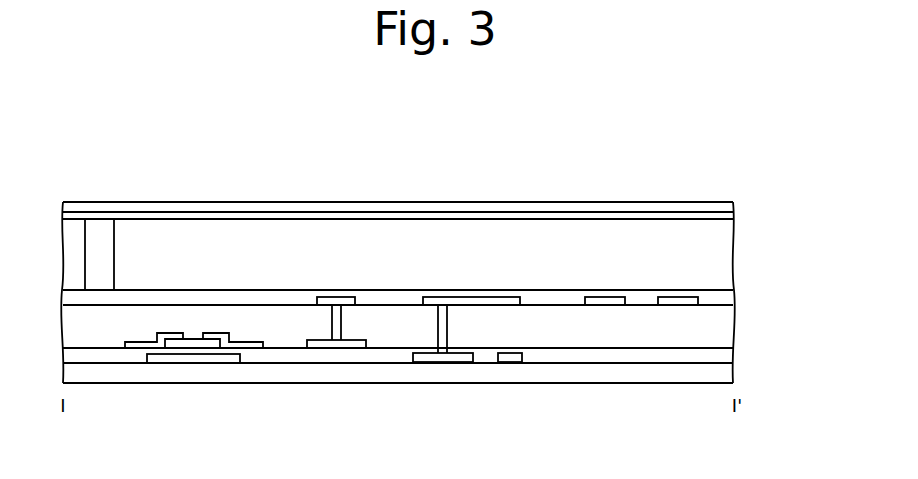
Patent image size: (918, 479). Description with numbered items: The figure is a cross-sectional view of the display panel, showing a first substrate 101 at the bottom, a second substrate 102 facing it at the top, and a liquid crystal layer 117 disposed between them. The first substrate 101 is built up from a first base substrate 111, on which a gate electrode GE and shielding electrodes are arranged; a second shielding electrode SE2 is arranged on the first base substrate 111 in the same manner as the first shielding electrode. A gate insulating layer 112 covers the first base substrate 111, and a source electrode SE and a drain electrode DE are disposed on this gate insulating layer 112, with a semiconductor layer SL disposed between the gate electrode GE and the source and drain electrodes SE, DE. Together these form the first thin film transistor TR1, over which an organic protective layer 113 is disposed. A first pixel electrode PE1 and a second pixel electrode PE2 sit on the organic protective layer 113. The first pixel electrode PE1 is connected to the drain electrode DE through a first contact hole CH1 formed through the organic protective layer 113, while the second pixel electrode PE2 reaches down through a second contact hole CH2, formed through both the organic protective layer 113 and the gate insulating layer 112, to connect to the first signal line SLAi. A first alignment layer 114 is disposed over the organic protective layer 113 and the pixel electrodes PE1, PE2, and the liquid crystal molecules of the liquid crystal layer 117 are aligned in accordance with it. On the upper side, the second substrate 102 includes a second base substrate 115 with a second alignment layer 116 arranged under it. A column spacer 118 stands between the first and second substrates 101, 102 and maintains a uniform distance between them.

The column spacer 118 is at (107, 248).
The first pixel electrode PE1 is at (323, 297).
The first contact hole CH1 is at (357, 326).
The second pixel electrode PE2 is at (428, 297).
The second contact hole CH2 is at (463, 326).
The first signal line SLAi is at (455, 362).
The second shielding electrode SE2 is at (510, 362).
The drain electrode DE is at (336, 348).
The source electrode SE is at (135, 348).
The semiconductor layer SL is at (210, 348).
The gate electrode GE is at (172, 363).
The first thin film transistor TR1 is at (265, 428).
The second base substrate 115 is at (736, 204).
The second alignment layer 116 is at (736, 219).
The liquid crystal layer 117 is at (726, 265).
The second substrate 102 is at (813, 205).
The first alignment layer 114 is at (726, 298).
The organic protective layer 113 is at (726, 330).
The gate insulating layer 112 is at (726, 350).
The first base substrate 111 is at (726, 378).
The first substrate 101 is at (813, 290).